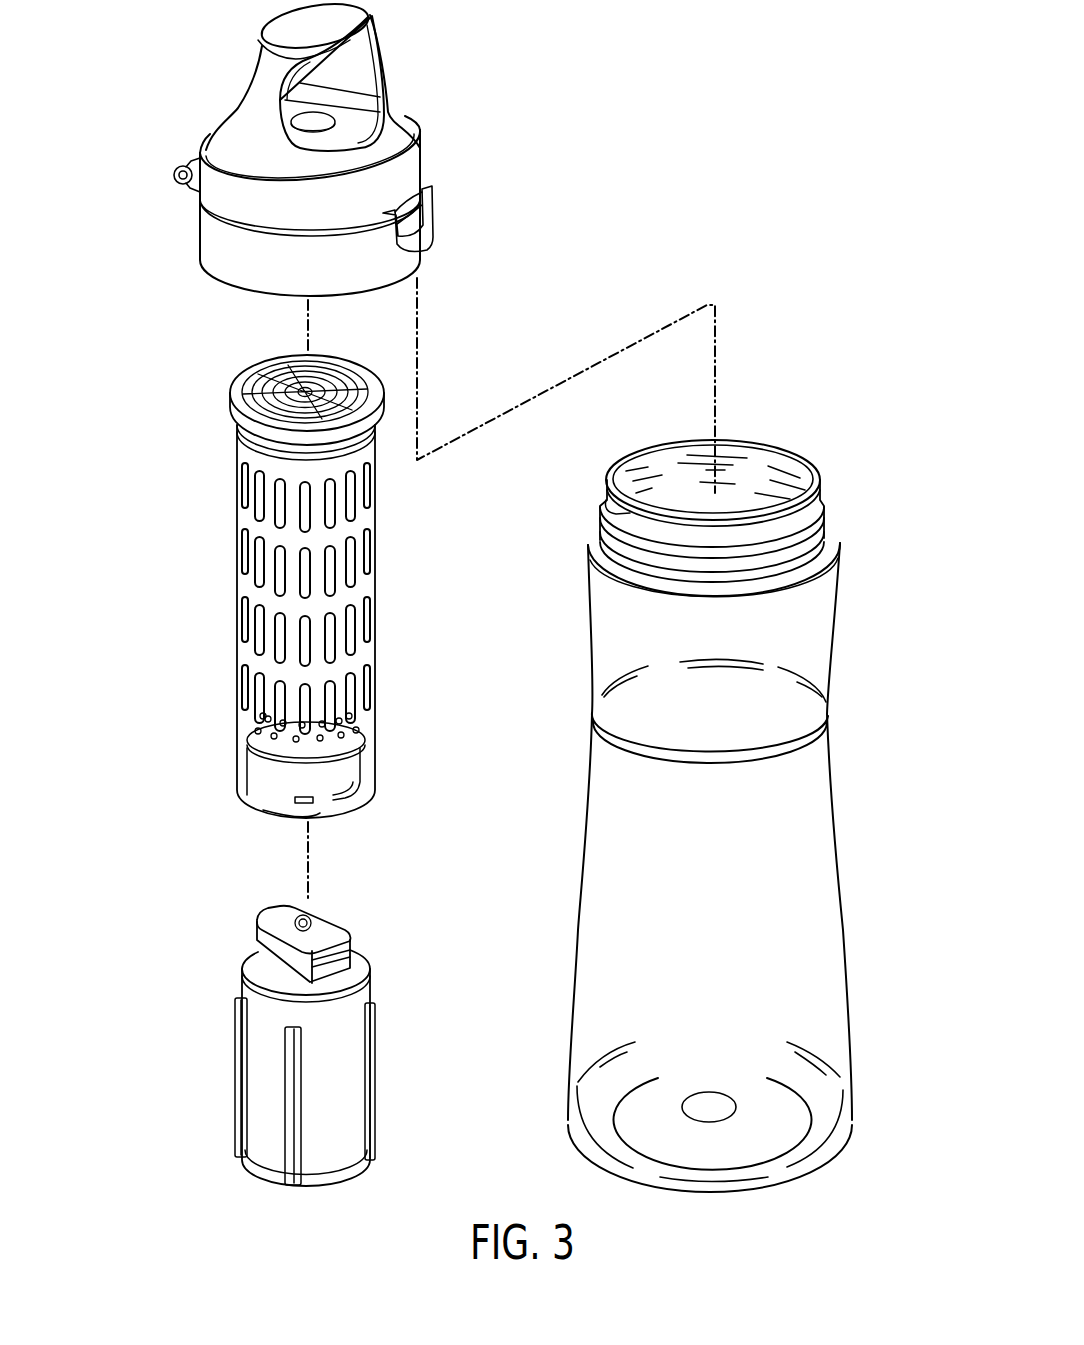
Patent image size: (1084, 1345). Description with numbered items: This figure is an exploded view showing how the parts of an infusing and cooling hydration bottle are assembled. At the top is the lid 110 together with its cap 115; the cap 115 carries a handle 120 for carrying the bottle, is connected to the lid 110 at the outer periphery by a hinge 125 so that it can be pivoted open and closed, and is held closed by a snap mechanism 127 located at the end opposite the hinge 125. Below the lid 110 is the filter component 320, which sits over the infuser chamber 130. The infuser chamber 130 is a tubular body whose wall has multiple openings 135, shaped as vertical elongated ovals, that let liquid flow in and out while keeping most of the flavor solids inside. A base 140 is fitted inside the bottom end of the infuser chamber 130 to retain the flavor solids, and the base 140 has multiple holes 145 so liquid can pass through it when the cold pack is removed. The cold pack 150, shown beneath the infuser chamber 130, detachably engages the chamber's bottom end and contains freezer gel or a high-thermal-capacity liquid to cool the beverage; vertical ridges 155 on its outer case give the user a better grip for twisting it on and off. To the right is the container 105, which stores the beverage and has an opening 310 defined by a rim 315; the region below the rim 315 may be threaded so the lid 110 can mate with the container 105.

The container 105 is at (845, 967).
The lid 110 is at (200, 230).
The cap 115 is at (423, 155).
The handle 120 is at (263, 32).
The hinge 125 is at (190, 163).
The snap mechanism 127 is at (410, 227).
The infuser chamber 130 is at (237, 522).
The openings 135 is at (305, 575).
The base 140 is at (247, 732).
The holes 145 is at (278, 742).
The cold pack 150 is at (337, 1018).
The ridges 155 is at (300, 1103).
The opening 310 is at (738, 498).
The rim 315 is at (823, 502).
The filter component 320 is at (247, 372).